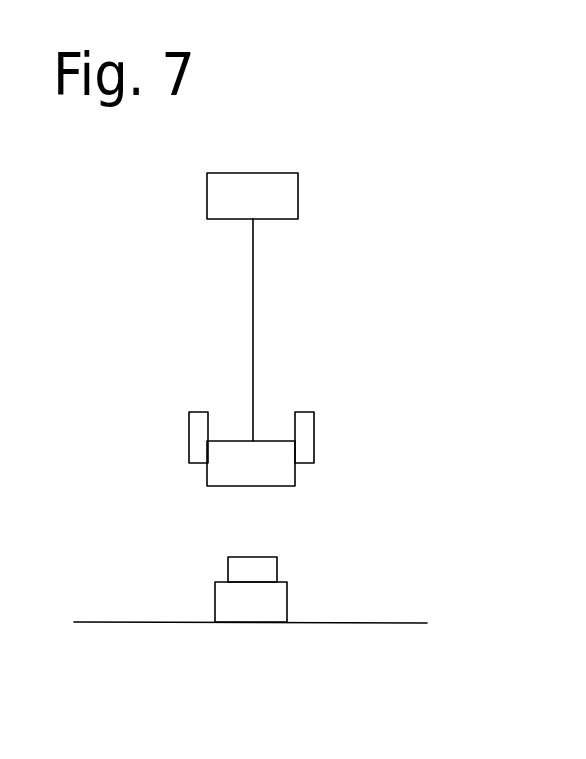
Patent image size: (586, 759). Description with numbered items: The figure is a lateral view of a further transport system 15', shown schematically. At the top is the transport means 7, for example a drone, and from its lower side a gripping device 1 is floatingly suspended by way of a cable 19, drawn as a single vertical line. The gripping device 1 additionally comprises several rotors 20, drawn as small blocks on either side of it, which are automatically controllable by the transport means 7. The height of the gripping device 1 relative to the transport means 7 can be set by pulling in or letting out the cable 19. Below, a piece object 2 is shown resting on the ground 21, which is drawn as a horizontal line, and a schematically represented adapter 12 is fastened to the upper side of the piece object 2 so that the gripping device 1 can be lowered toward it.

The transport system 15' is at (454, 150).
The transport means 7 is at (207, 192).
The cable 19 is at (253, 300).
The gripping device 1 is at (282, 487).
The rotors 20 is at (189, 425).
The adapter 12 is at (230, 557).
The piece object 2 is at (243, 617).
The ground 21 is at (105, 623).